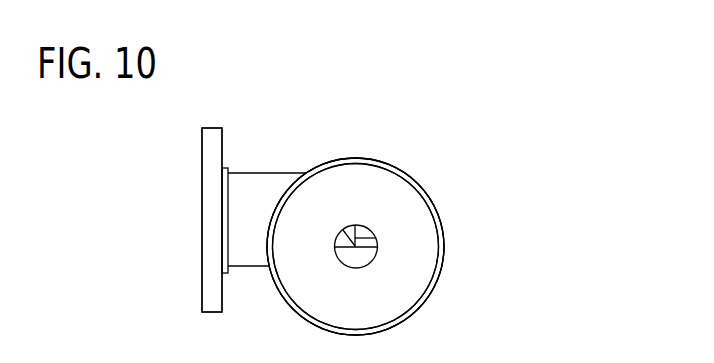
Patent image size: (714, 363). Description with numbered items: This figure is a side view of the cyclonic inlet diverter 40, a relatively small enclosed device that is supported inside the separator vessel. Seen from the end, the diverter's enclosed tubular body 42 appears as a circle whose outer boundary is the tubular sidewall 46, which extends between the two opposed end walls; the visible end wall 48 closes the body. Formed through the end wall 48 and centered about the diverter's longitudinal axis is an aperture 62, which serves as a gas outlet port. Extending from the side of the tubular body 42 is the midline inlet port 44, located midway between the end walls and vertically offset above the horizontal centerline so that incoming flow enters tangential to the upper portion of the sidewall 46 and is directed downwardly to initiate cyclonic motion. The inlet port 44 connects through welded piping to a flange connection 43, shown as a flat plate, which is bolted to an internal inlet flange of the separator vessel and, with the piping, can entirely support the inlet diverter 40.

The cyclonic inlet diverter 40 is at (488, 128).
The tubular body 42 is at (447, 192).
The flange connection 43 is at (223, 133).
The midline inlet port 44 is at (195, 220).
The tubular sidewall 46 is at (387, 163).
The end wall 48 is at (350, 214).
The aperture 62 is at (357, 255).